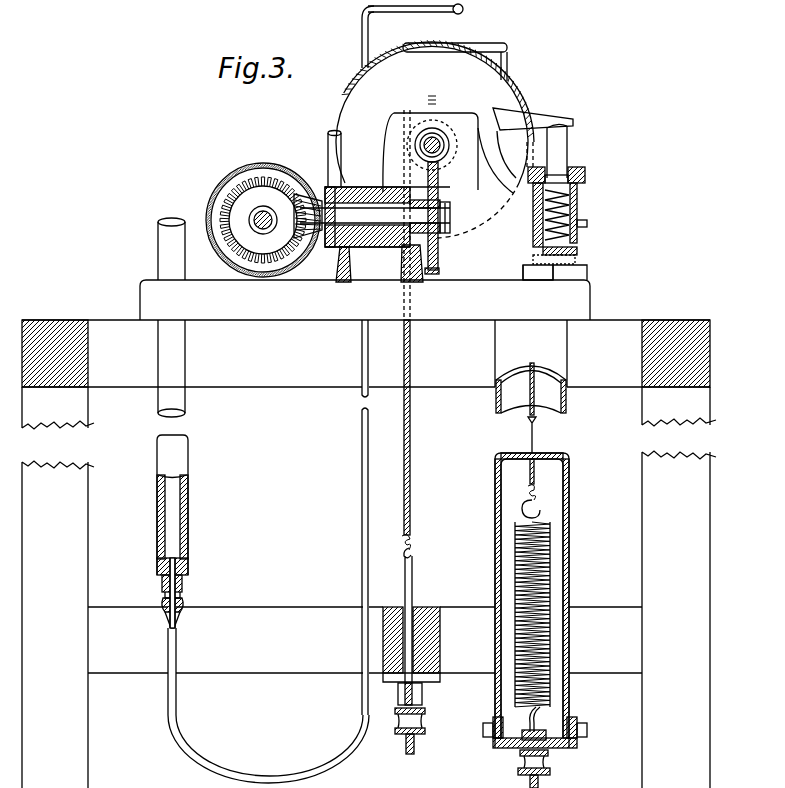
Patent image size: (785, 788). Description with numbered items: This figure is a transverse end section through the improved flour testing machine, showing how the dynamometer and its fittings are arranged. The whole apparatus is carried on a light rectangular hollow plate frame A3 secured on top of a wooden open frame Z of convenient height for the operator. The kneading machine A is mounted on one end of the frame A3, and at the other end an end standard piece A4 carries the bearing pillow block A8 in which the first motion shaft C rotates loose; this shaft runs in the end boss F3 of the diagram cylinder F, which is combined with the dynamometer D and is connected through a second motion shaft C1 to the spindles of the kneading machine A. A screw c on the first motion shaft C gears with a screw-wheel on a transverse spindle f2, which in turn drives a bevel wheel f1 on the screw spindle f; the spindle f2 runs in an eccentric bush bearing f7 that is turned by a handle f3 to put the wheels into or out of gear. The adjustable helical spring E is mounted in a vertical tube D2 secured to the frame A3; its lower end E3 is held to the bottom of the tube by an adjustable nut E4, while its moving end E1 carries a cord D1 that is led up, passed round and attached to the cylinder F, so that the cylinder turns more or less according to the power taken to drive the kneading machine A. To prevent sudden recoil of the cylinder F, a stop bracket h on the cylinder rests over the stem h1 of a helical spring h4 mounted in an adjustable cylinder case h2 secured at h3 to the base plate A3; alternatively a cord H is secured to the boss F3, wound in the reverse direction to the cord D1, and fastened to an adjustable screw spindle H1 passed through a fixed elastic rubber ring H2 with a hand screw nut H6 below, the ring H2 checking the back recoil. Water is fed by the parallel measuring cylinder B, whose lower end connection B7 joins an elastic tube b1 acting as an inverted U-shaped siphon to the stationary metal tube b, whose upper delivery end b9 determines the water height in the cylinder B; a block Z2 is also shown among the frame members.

The kneading machine A is at (487, 49).
The rectangular hollow plate frame A3 is at (365, 300).
The end standard piece A4 is at (525, 264).
The bearing pillow block A8 is at (387, 223).
The parallel measuring cylinder B is at (172, 396).
The lower end connection of the cylinder B7 is at (186, 582).
The stationary small metal tube b is at (370, 37).
The elastic tube b1 is at (362, 360).
The upper delivery end of the tube b9 is at (404, 8).
The first motion shaft C is at (436, 140).
The second motion shaft C1 is at (439, 187).
The screw c is at (445, 152).
The dynamometer D is at (432, 142).
The cord D1 is at (346, 98).
The vertical tube D2 is at (533, 441).
The adjustable helical spring E is at (532, 614).
The moving end of the spring E1 is at (541, 510).
The end of the spring E3 is at (540, 722).
The adjustable nut E4 is at (549, 764).
The diagram cylinder F is at (444, 70).
The end boss of the cylinder F3 is at (412, 141).
The screw spindle f is at (264, 230).
The bevel wheel f1 is at (263, 220).
The transverse spindle f2 is at (303, 216).
The handle f3 is at (327, 148).
The eccentric bush bearing f7 is at (353, 194).
The cord H is at (403, 269).
The adjustable screw spindle H1 is at (413, 569).
The elastic ring H2 is at (423, 699).
The adjustable hand screw nut H6 is at (426, 724).
The stop bracket h is at (528, 118).
The stem h1 is at (557, 151).
The adjustable cylinder case h2 is at (588, 228).
The securing point of the cylinder case h3 is at (584, 270).
The helical spring h4 is at (578, 213).
The wooden open frame Z is at (369, 554).
The block Z2 is at (422, 644).